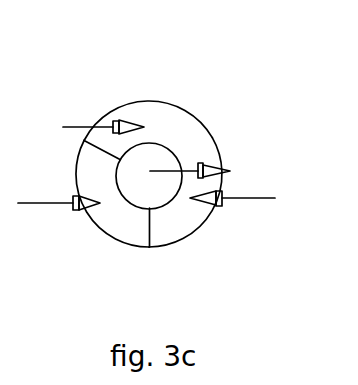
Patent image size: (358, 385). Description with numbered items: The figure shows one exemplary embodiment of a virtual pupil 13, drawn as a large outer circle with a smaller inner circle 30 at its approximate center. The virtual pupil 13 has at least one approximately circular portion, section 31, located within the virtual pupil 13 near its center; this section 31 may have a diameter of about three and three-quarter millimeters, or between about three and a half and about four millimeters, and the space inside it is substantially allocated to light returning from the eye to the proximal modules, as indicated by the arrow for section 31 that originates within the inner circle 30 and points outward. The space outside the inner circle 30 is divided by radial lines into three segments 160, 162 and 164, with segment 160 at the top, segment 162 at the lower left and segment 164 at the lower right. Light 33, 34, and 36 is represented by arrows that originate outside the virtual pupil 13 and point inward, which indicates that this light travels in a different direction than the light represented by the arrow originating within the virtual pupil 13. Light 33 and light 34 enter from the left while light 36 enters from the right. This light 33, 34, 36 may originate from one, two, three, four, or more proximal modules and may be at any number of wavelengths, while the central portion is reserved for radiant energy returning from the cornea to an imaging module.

The virtual pupil 13 is at (159, 167).
The inner circle 30 is at (148, 188).
The section 31 is at (180, 160).
The light 33 is at (90, 127).
The light 34 is at (38, 207).
The light 36 is at (252, 193).
The segment 160 is at (130, 103).
The segment 162 is at (128, 247).
The segment 164 is at (187, 238).